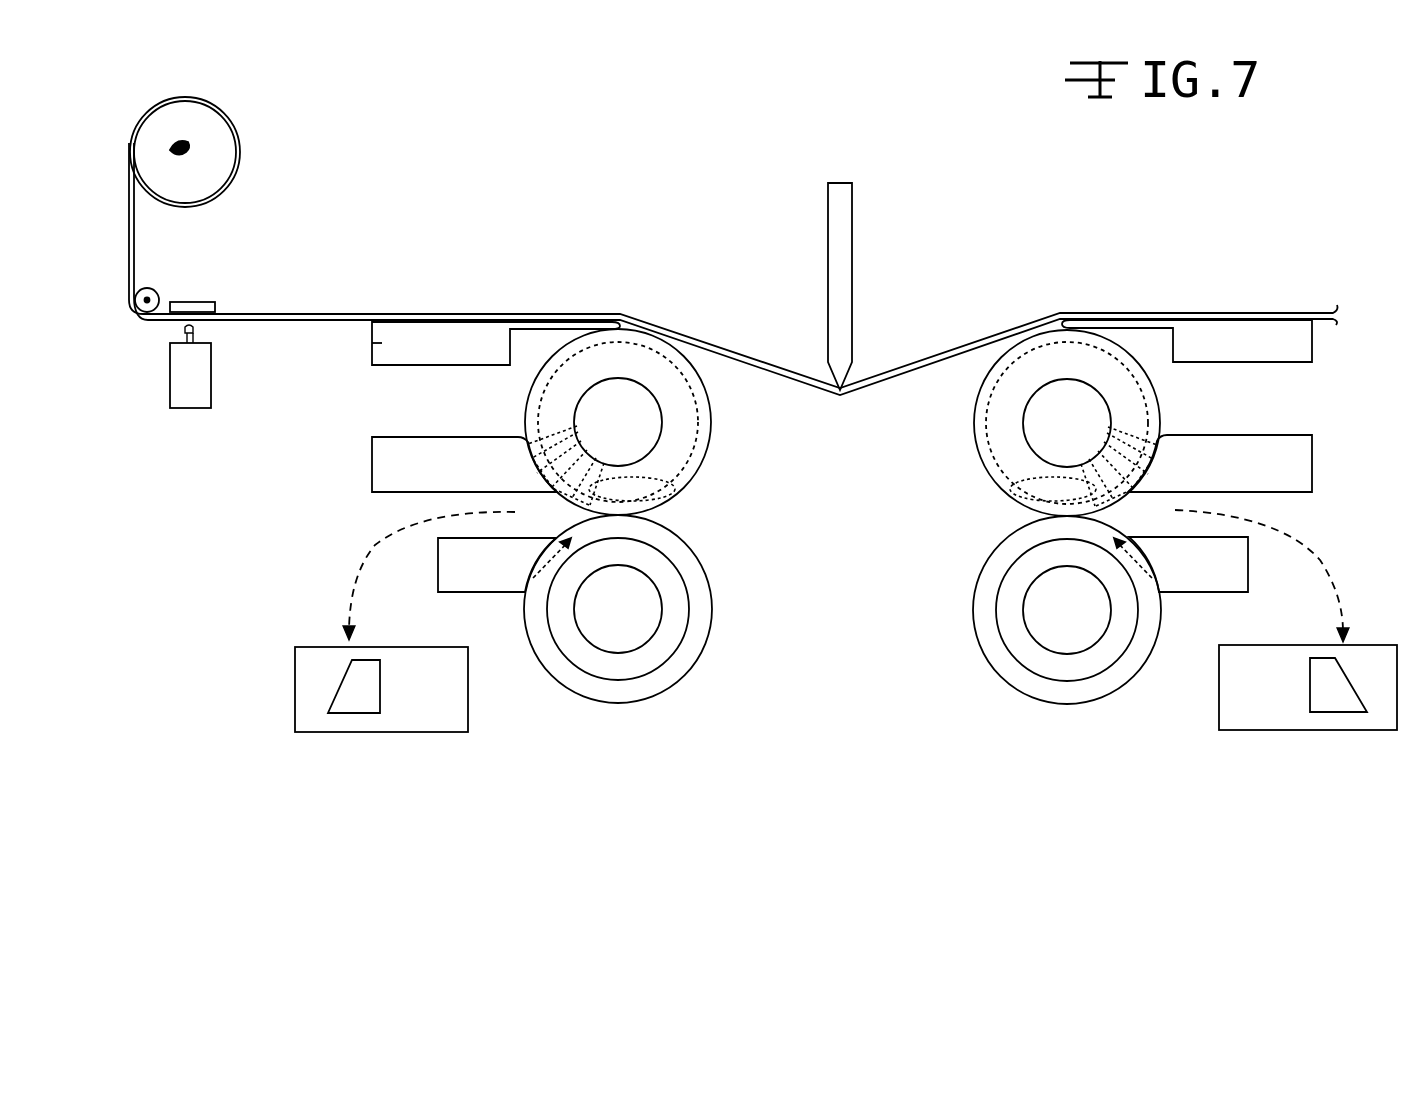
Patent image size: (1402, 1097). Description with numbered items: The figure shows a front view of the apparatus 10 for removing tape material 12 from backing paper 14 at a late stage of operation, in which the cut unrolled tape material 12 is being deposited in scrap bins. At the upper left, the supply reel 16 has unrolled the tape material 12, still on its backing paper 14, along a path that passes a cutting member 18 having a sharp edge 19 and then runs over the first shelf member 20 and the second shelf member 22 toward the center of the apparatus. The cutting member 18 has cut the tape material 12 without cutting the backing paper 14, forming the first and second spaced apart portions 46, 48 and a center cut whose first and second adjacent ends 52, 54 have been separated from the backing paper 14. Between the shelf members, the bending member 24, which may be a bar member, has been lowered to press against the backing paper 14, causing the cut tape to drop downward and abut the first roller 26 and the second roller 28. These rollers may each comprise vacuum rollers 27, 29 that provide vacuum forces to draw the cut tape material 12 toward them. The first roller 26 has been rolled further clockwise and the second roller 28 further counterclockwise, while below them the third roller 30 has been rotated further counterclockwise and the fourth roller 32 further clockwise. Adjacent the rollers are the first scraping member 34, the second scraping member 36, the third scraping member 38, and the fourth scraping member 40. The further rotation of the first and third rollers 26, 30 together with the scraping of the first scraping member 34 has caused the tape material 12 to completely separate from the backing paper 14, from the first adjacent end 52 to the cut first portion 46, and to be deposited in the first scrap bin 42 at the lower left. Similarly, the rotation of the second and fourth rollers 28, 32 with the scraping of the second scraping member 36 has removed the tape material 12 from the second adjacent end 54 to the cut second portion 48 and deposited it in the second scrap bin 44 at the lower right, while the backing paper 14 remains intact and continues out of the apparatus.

The apparatus 10 is at (955, 216).
The tape material 12 is at (133, 318).
The backing paper 14 is at (138, 262).
The supply reel 16 is at (218, 142).
The cutting member 18 is at (197, 330).
The sharp edge 19 is at (182, 327).
The first shelf member 20 is at (372, 343).
The second shelf member 22 is at (1267, 348).
The bending member 24 is at (836, 256).
The first roller 26 is at (525, 398).
The vacuum roller 27 is at (675, 490).
The second roller 28 is at (1148, 388).
The vacuum roller 29 is at (1027, 486).
The third roller 30 is at (675, 667).
The fourth roller 32 is at (995, 662).
The first scraping member 34 is at (396, 494).
The second scraping member 36 is at (1312, 465).
The third scraping member 38 is at (438, 585).
The fourth scraping member 40 is at (1248, 560).
The first scrap bin 42 is at (292, 715).
The second scrap bin 44 is at (1280, 720).
The first spaced apart portion 46 is at (338, 692).
The second spaced apart portion 48 is at (1352, 675).
The first adjacent end 52 is at (381, 688).
The second adjacent end 54 is at (1310, 683).